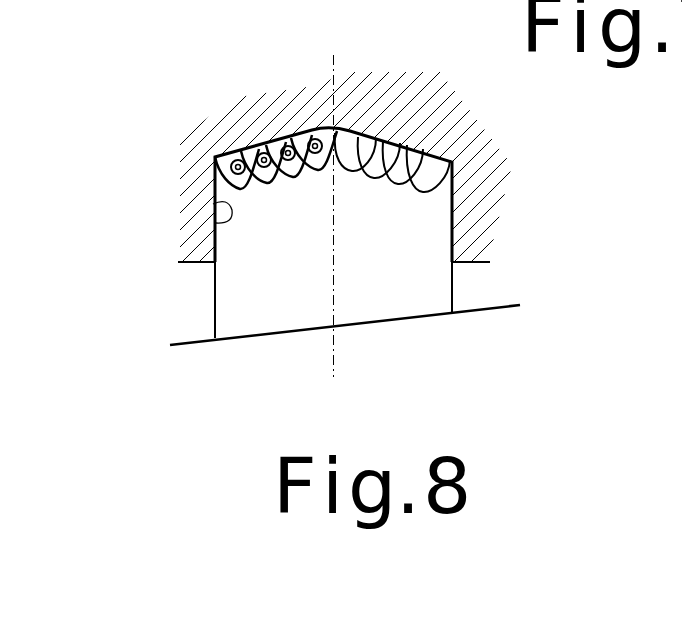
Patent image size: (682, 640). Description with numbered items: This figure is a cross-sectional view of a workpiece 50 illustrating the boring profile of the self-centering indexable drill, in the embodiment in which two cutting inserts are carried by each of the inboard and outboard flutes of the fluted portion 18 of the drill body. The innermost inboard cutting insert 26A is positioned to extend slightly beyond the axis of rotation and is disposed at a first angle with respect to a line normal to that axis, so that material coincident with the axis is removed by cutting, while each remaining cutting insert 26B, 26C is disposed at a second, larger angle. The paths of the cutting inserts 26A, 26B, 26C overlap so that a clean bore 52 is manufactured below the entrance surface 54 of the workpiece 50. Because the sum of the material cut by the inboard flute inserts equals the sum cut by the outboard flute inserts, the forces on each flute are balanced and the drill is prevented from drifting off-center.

The fluted portion 18 is at (422, 263).
The innermost inboard cutting insert 26A is at (310, 136).
The cutting insert 26B is at (228, 166).
The cutting insert 26C is at (258, 143).
The workpiece 50 is at (472, 263).
The bore 52 is at (213, 204).
The entrance surface 54 is at (197, 263).